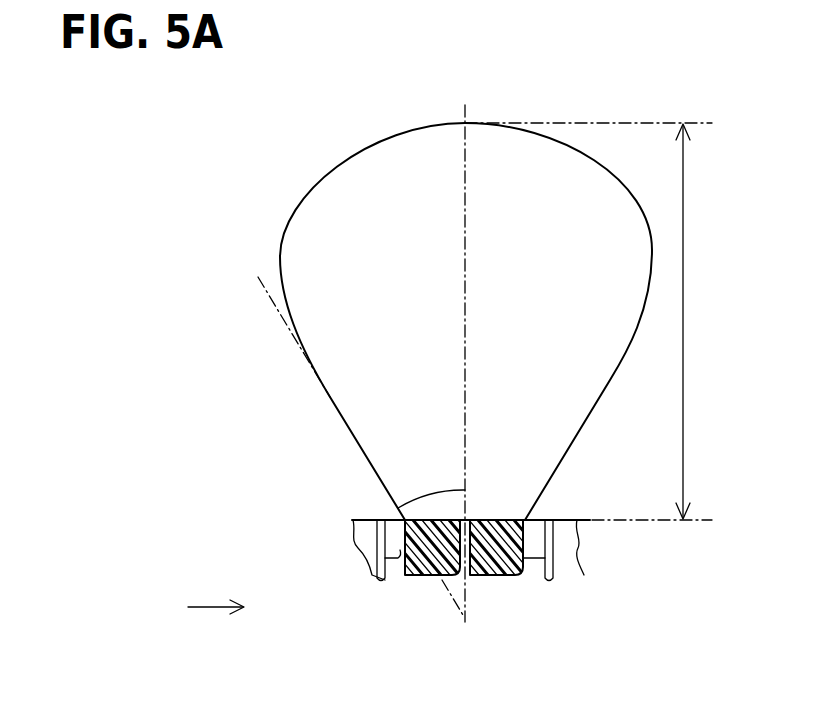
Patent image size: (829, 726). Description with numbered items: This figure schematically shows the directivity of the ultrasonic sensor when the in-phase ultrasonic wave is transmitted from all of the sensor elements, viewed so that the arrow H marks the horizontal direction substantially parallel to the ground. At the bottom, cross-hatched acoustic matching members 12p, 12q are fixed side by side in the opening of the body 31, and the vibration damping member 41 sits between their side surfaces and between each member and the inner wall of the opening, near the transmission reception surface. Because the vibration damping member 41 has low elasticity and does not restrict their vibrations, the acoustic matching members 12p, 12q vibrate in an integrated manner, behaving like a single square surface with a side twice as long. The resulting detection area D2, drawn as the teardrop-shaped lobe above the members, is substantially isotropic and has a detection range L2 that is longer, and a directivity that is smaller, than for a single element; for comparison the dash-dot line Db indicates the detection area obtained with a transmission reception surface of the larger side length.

The body 31 is at (380, 540).
The vibration damping member 41 is at (395, 560).
The acoustic matching member 12p is at (427, 566).
The acoustic matching member 12q is at (490, 566).
The detection area D2 is at (346, 167).
The detection area Db is at (310, 348).
The detection range L2 is at (595, 321).
The horizontal direction H is at (216, 619).